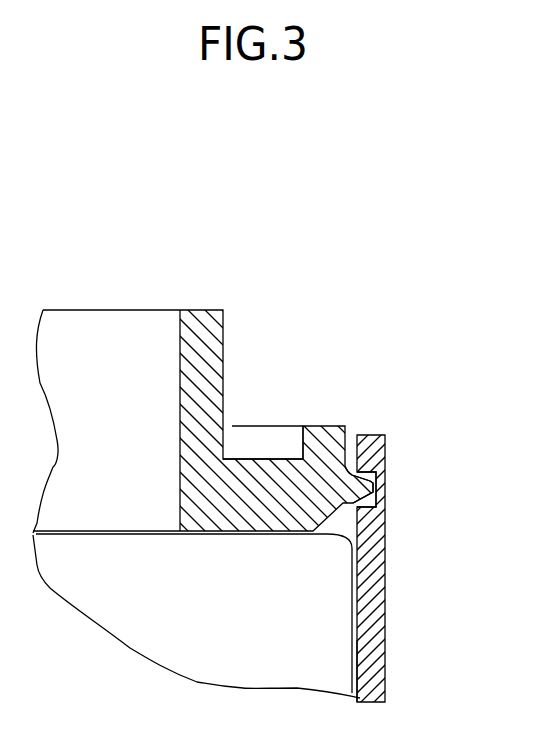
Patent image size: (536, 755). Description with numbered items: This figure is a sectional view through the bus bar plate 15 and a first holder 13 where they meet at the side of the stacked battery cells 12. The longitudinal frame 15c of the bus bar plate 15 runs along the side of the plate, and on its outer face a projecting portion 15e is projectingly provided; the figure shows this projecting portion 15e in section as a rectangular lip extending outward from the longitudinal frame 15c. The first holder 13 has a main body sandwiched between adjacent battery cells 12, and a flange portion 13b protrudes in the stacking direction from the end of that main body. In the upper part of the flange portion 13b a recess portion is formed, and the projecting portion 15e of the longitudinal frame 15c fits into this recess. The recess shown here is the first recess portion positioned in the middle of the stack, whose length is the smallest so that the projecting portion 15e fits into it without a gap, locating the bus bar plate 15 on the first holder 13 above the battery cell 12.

The battery cell 12 is at (226, 630).
The first holder 13 is at (398, 589).
The flange portion 13b is at (373, 653).
The bus bar plate 15 is at (208, 302).
The longitudinal frame 15c is at (271, 470).
The projecting portion 15e is at (364, 492).